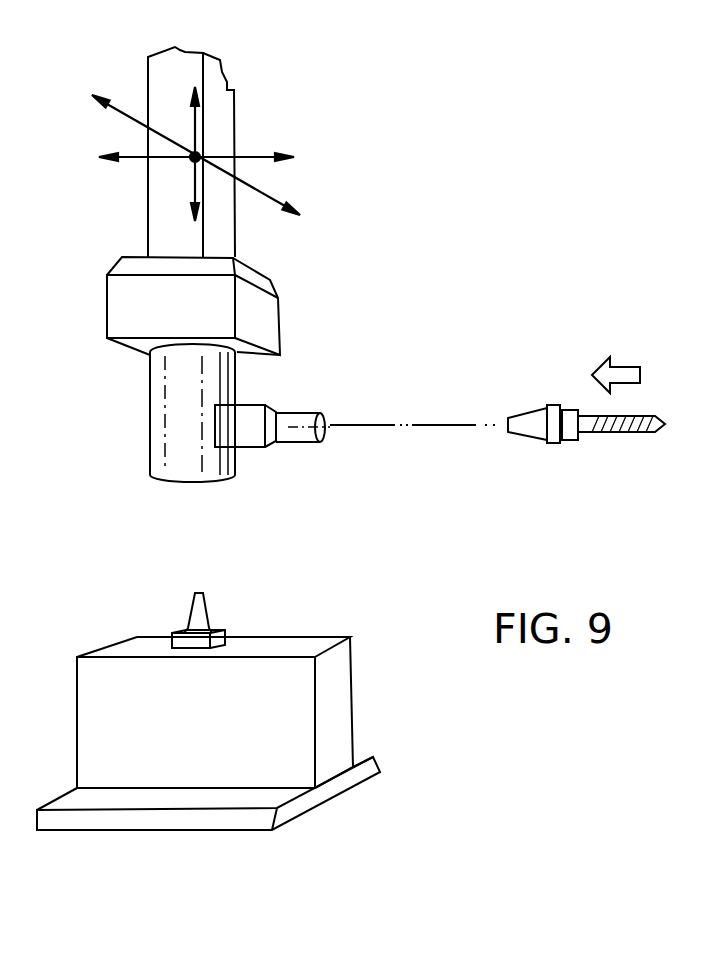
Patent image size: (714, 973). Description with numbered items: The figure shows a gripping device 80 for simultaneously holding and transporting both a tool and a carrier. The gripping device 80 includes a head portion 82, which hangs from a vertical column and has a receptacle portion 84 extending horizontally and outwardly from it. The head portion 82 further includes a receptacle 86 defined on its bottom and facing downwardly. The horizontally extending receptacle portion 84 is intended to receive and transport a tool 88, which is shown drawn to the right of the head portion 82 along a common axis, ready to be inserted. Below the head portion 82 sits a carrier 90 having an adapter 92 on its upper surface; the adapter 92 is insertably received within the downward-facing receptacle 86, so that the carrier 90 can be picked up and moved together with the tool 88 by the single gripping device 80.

The gripping device 80 is at (306, 316).
The head portion 82 is at (150, 427).
The receptacle portion 84 is at (322, 399).
The receptacle 86 is at (197, 478).
The tool 88 is at (562, 405).
The carrier 90 is at (357, 668).
The adapter 92 is at (207, 613).